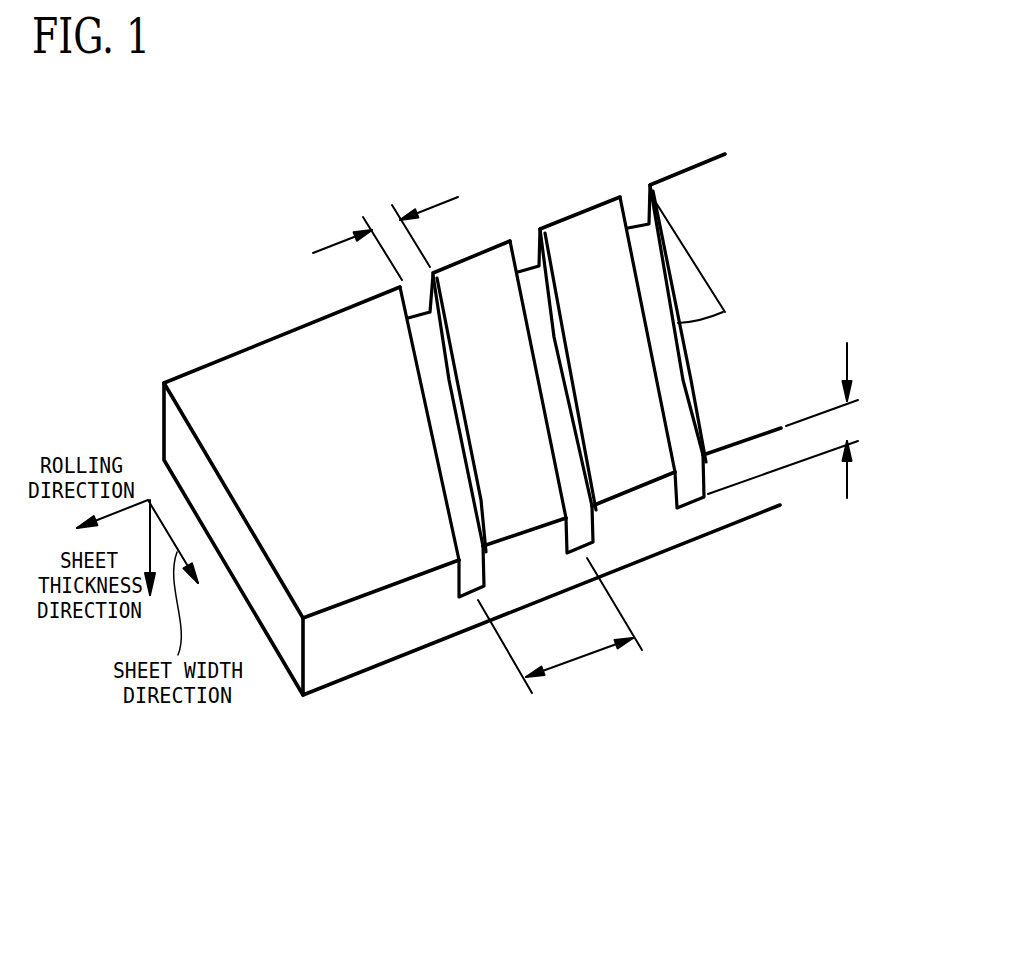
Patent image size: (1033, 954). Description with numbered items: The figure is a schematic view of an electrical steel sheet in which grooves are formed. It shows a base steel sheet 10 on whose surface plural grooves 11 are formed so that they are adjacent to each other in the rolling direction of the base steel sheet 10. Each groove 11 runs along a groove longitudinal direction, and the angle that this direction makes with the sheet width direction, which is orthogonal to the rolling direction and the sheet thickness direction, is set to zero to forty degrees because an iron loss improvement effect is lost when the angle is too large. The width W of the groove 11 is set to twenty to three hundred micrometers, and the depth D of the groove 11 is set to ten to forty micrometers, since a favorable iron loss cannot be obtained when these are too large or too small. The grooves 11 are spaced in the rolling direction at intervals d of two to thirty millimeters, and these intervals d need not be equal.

The base steel sheet 10 is at (222, 352).
The groove 11 is at (533, 280).
The width of the groove W is at (380, 213).
The depth of the groove D is at (853, 418).
The interval between the grooves d is at (585, 663).